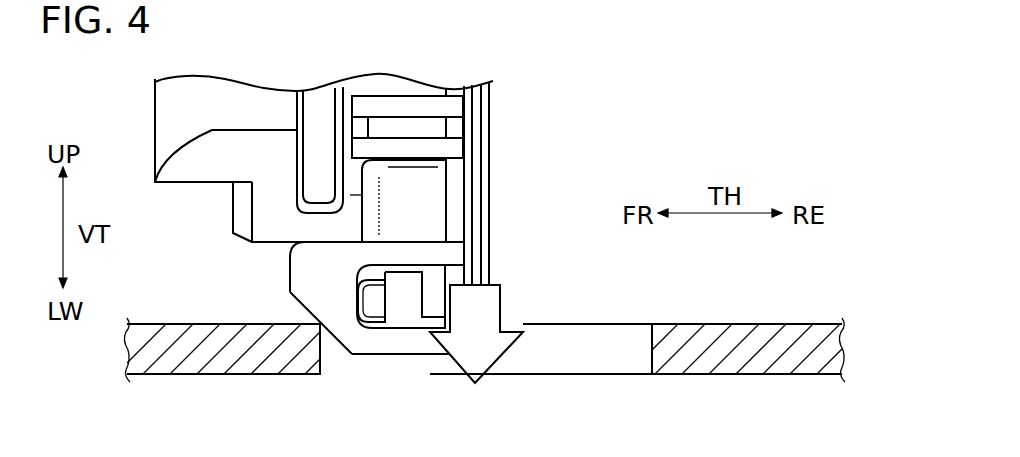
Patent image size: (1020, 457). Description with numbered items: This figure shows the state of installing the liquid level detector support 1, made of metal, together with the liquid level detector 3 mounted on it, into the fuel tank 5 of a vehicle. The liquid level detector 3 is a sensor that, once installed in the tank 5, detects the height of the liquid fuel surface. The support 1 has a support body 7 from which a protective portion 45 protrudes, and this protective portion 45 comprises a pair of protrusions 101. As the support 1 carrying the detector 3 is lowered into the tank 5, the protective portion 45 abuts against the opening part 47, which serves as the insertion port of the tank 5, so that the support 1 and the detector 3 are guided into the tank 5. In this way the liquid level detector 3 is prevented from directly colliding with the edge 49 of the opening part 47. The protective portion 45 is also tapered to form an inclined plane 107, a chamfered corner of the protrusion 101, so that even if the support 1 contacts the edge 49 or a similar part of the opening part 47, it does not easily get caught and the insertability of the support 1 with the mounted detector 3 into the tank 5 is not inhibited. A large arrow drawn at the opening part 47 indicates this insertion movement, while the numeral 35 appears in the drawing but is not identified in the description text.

The liquid level detector support 1 is at (490, 142).
The liquid level detector 3 is at (363, 84).
The fuel tank 5 is at (729, 317).
The support body 7 is at (489, 103).
The lower trim portion 35 is at (432, 198).
The protective portion 45 is at (298, 300).
The opening part 47 is at (548, 340).
The edge 49 is at (652, 324).
The protrusion 101 is at (378, 343).
The inclined surface 107 is at (334, 337).